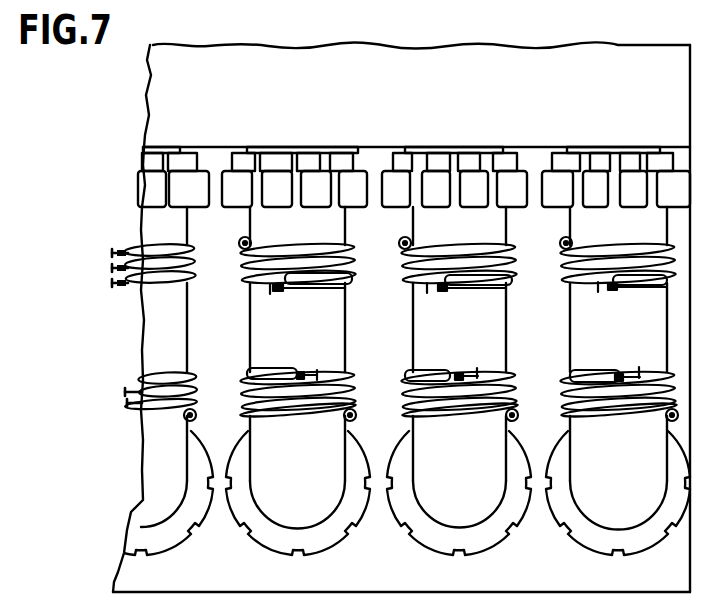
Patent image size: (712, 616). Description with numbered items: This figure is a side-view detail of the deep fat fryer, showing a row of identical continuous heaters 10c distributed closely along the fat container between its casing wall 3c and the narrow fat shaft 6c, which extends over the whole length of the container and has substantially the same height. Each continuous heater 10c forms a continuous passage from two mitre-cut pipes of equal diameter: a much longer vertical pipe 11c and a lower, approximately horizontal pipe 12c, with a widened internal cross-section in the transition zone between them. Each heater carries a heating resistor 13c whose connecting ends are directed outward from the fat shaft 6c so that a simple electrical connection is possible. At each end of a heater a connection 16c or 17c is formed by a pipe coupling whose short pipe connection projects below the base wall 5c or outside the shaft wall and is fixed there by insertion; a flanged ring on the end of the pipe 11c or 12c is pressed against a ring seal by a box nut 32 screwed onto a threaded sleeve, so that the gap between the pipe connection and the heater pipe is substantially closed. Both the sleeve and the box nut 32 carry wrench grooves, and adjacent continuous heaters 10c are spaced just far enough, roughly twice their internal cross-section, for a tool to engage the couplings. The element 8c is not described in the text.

The casing wall 3c is at (162, 89).
The base wall 5c is at (209, 149).
The continuous heater 10c is at (341, 138).
The connection 17c is at (558, 213).
The heating resistor 13c is at (243, 275).
The vertical pipe 11c is at (412, 337).
The fat shaft 6c is at (670, 315).
The connection 16c is at (238, 541).
The horizontal pipe 12c is at (440, 529).
The box nut 32 is at (481, 528).
The base plate 8c is at (506, 592).